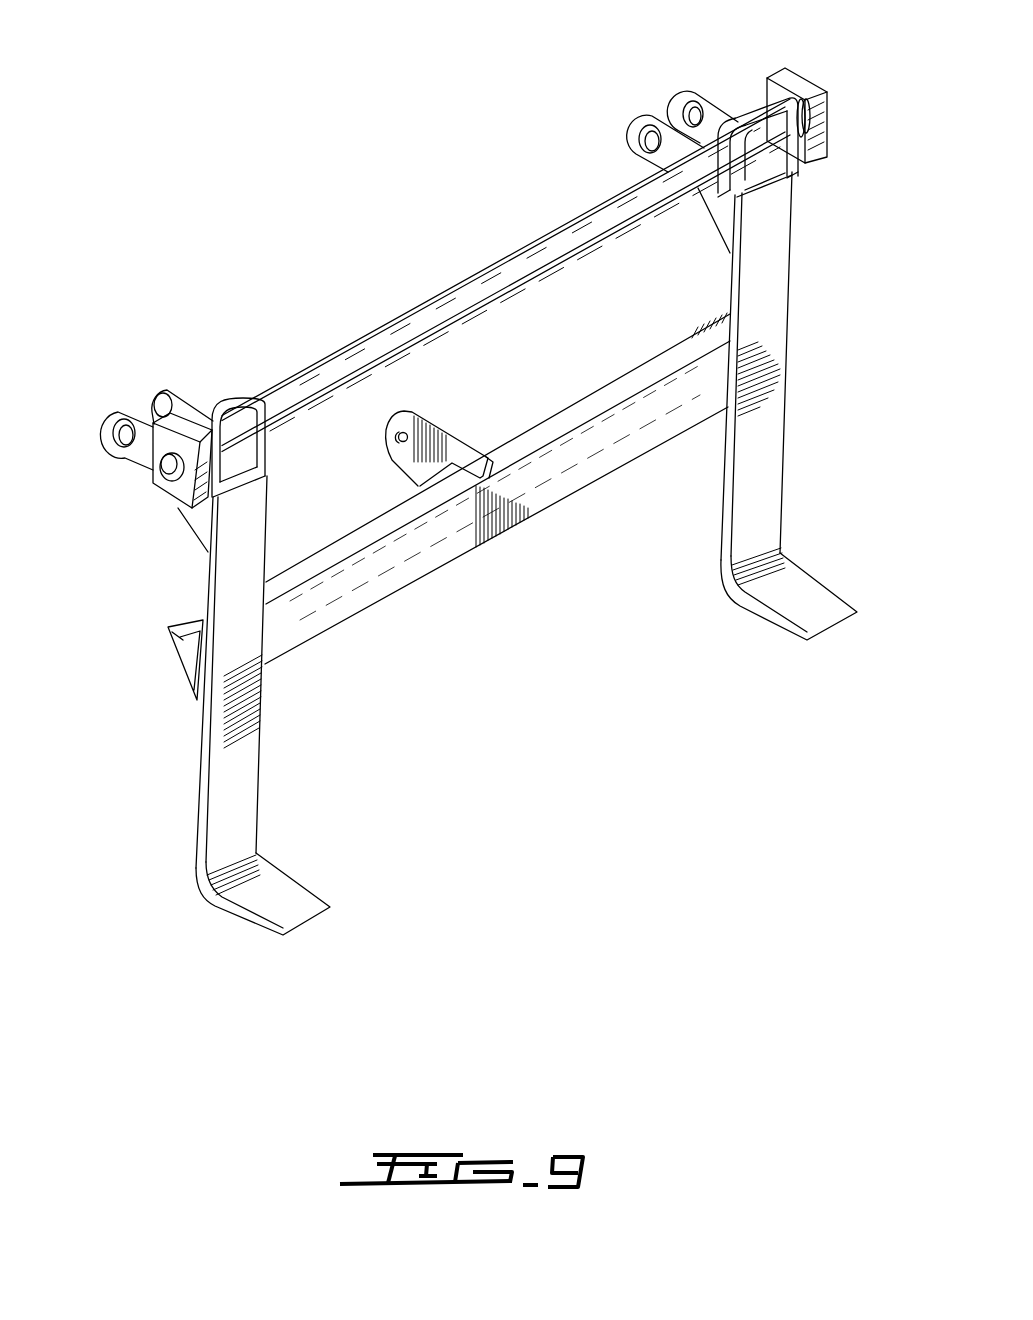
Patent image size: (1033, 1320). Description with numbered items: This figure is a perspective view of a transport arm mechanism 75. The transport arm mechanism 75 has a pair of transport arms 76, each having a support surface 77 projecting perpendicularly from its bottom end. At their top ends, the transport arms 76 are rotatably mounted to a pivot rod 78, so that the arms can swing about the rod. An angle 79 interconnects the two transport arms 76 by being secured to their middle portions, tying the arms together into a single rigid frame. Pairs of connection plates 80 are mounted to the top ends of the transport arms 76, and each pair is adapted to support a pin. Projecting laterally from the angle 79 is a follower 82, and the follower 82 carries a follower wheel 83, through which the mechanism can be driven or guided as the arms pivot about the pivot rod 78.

The transport arm mechanism 75 is at (494, 494).
The transport arms 76 is at (770, 470).
The support surfaces 77 is at (780, 612).
The pivot rod 78 is at (382, 335).
The angle 79 is at (313, 555).
The connection plates 80 is at (698, 102).
The follower 82 is at (386, 448).
The follower wheel 83 is at (422, 412).